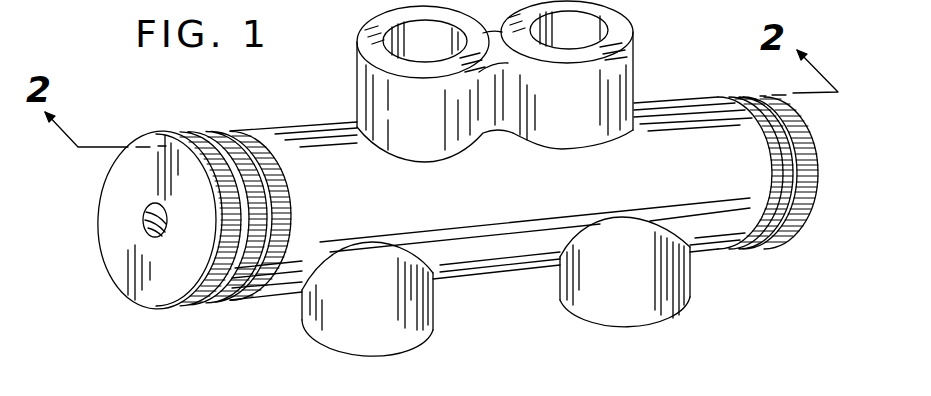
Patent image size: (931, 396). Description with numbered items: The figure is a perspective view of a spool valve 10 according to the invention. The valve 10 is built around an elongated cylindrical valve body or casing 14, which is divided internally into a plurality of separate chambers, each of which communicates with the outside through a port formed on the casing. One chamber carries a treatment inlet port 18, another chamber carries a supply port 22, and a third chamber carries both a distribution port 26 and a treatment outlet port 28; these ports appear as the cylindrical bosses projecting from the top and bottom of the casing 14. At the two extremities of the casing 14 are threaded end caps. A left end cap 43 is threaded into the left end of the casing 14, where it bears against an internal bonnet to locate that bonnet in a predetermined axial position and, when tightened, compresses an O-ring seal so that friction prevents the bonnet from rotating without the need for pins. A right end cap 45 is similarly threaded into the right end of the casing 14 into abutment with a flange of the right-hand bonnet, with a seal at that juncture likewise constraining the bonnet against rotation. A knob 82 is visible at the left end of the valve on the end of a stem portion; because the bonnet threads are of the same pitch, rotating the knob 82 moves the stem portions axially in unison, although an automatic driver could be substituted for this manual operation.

The valve 10 is at (292, 120).
The valve body or casing 14 is at (680, 104).
The treatment inlet port 18 is at (655, 313).
The supply port 22 is at (603, 24).
The distribution port 26 is at (380, 30).
The treatment outlet port 28 is at (383, 343).
The left end cap 43 is at (233, 133).
The right end cap 45 is at (795, 213).
The knob 82 is at (100, 216).